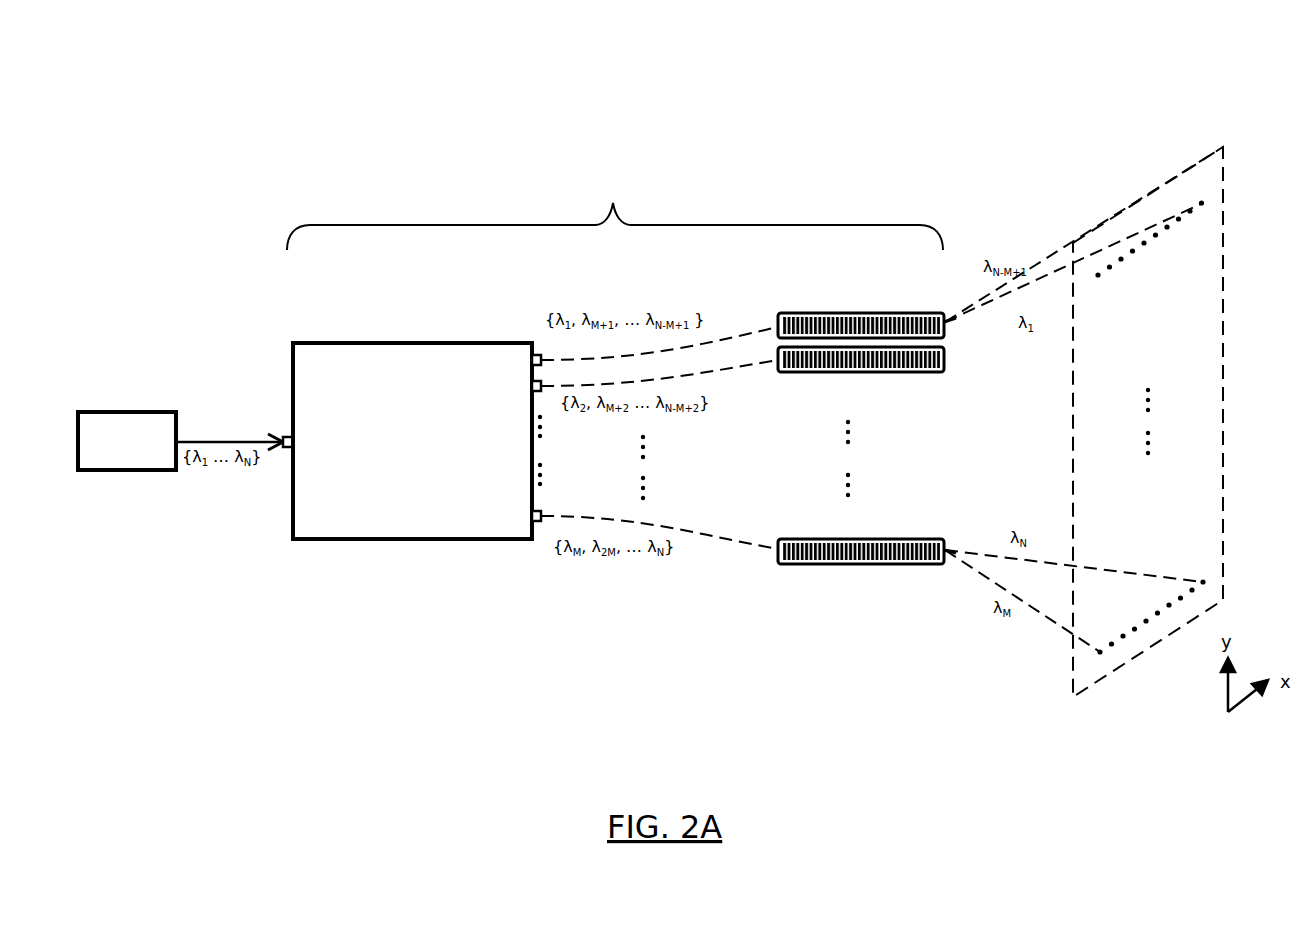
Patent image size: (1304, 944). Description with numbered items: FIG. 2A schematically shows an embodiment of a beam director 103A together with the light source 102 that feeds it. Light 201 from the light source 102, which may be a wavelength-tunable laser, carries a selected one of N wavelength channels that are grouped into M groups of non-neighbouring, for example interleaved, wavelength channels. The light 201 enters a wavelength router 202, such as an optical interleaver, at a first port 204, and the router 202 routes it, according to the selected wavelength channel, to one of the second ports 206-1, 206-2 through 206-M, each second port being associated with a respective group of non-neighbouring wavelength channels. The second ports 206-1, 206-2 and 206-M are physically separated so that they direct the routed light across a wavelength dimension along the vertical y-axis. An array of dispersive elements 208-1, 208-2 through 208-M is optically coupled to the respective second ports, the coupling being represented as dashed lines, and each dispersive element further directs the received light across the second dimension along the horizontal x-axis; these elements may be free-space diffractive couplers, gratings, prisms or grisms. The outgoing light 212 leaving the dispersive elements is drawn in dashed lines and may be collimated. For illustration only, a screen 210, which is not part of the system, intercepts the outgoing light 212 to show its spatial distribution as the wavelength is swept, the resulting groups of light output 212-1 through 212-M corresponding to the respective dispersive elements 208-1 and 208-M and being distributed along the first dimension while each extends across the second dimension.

The light source 102 is at (137, 412).
The light 201 is at (195, 440).
The first port 204 is at (283, 449).
The wavelength router 202 is at (416, 343).
The second port 206-1 is at (532, 360).
The second port 206-2 is at (532, 386).
The second port 206-M is at (532, 516).
The beam director 103A is at (615, 214).
The dispersive element 208-1 is at (890, 312).
The dispersive element 208-2 is at (892, 374).
The dispersive element 208-M is at (890, 566).
The screen 210 is at (1198, 163).
The outgoing light 212 is at (990, 557).
The group of light output 212-1 is at (1150, 242).
The group of light output 212-M is at (1122, 645).